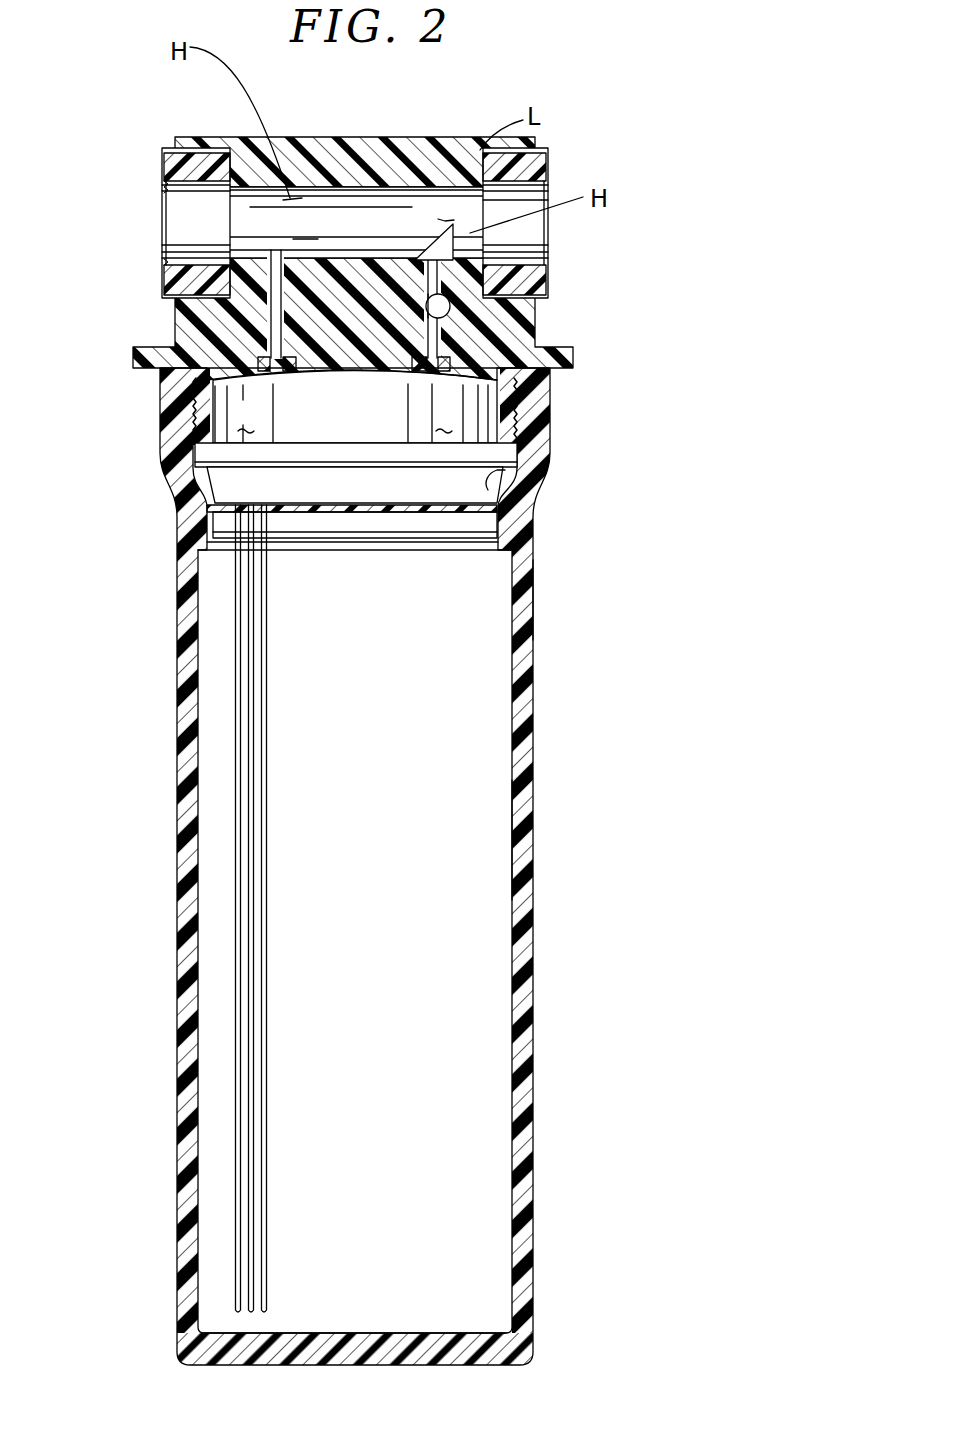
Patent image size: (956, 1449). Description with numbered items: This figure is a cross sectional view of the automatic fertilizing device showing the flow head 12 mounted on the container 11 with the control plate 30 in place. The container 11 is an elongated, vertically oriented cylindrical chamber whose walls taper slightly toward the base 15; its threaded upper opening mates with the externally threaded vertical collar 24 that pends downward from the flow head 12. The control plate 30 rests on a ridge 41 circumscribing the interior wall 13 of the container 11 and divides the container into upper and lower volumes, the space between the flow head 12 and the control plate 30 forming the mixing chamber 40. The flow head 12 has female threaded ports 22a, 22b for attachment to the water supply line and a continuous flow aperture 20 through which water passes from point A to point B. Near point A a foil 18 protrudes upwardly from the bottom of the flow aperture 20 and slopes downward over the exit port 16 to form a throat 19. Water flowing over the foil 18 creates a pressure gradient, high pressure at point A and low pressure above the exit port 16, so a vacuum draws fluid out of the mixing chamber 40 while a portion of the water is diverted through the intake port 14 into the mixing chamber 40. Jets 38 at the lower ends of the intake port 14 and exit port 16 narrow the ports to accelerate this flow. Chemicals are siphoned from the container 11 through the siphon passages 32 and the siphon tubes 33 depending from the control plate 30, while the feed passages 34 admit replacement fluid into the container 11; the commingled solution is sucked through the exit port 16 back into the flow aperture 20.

The container 11 is at (533, 762).
The flow head 12 is at (207, 140).
The interior wall 13 is at (508, 808).
The intake port 14 is at (272, 252).
The base 15 is at (462, 1332).
The exit port 16 is at (418, 260).
The foil 18 is at (417, 258).
The throat 19 is at (467, 210).
The flow aperture 20 is at (580, 228).
The female threaded port 22a is at (523, 270).
The female threaded port 22b is at (187, 287).
The vertical collar 24 is at (553, 432).
The control plate 30 is at (462, 513).
The siphon passage 32 is at (223, 503).
The siphon tube 33 is at (257, 642).
The feed passage 34 is at (433, 503).
The jet 38 is at (282, 378).
The mixing chamber 40 is at (536, 482).
The ridge 41 is at (505, 540).